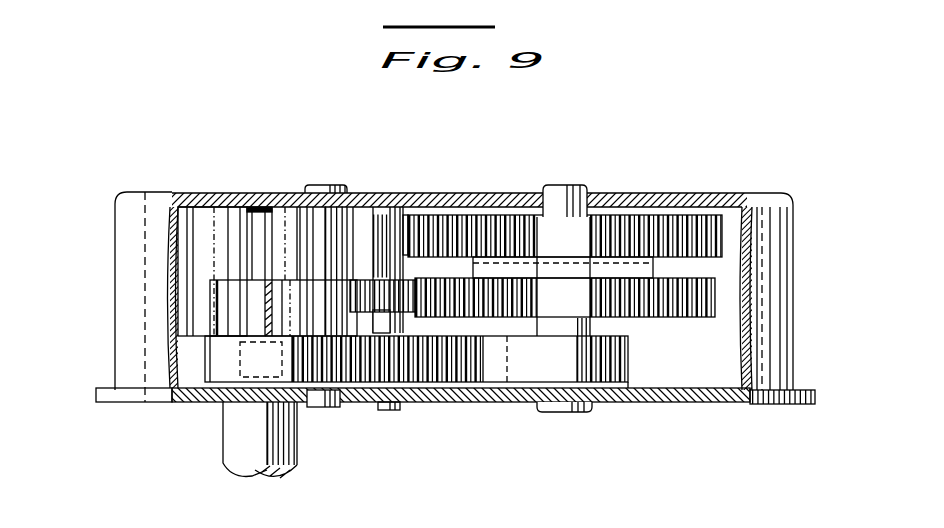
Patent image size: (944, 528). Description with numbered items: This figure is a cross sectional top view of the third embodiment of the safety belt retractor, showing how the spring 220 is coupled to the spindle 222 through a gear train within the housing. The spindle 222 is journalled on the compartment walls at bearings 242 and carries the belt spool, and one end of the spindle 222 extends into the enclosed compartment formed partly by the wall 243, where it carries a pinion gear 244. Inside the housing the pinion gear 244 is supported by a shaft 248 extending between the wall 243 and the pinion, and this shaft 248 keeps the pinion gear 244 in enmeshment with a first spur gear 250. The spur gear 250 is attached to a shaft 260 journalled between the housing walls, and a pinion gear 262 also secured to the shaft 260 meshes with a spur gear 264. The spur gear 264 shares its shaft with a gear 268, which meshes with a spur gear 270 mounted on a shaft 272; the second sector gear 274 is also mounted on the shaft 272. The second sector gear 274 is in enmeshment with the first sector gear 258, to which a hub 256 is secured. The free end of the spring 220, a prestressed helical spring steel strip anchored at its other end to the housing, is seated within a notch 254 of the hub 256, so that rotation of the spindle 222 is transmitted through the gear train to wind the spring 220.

The positive coefficient of force spring 220 is at (307, 290).
The spindle 222 is at (223, 463).
The bearings 242 is at (432, 403).
The wall 243 is at (475, 195).
The pinion gear 244 is at (240, 357).
The shaft 248 is at (248, 238).
The first spur gear 250 is at (283, 333).
The notch 254 is at (328, 192).
The hub 256 is at (310, 217).
The first sector gear 258 is at (307, 405).
The shaft 260 is at (398, 283).
The pinion gear 262 is at (410, 256).
The spur gear 264 is at (683, 310).
The gear 268 is at (655, 262).
The spur gear 270 is at (697, 225).
The shaft 272 is at (570, 205).
The second sector gear 274 is at (623, 383).